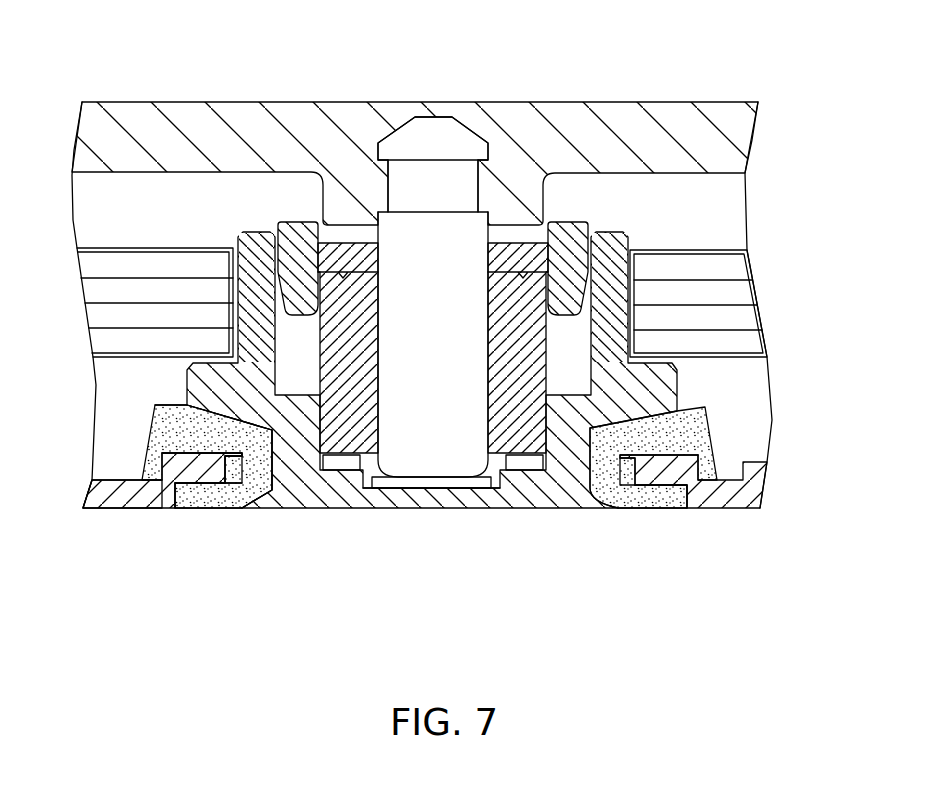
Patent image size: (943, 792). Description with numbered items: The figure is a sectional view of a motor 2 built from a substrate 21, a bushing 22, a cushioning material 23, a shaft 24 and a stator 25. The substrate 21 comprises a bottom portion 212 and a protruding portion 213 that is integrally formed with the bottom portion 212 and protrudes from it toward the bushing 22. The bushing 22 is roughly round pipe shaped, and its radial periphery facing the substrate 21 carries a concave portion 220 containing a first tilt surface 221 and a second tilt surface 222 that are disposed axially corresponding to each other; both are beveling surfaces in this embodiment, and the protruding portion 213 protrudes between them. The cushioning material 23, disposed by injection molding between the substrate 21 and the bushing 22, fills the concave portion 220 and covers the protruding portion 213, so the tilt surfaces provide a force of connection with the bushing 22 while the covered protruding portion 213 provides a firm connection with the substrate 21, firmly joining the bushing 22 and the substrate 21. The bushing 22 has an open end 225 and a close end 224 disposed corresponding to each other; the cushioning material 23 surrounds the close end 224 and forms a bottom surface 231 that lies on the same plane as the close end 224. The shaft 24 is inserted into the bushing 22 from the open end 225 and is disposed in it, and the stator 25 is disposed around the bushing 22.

The motor 2 is at (106, 63).
The substrate 21 is at (727, 497).
The bottom portion 212 is at (127, 490).
The protruding portion 213 is at (190, 470).
The bushing 22 is at (257, 242).
The concave portion 220 is at (212, 440).
The first tilt surface 221 is at (213, 413).
The second tilt surface 222 is at (268, 488).
The close end 224 is at (442, 503).
The open end 225 is at (564, 198).
The cushioning material 23 is at (218, 498).
The bottom surface 231 is at (647, 510).
The shaft 24 is at (415, 455).
The stator 25 is at (96, 292).